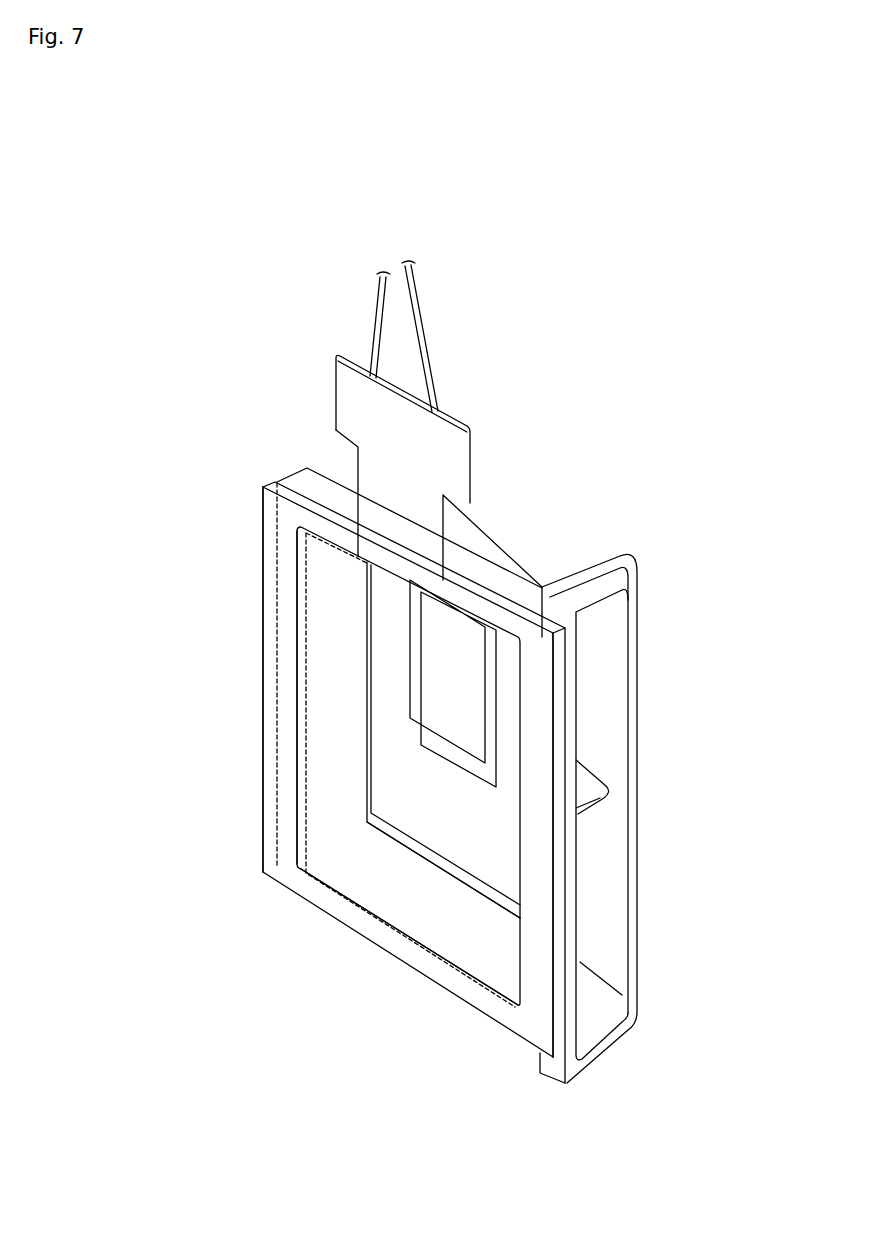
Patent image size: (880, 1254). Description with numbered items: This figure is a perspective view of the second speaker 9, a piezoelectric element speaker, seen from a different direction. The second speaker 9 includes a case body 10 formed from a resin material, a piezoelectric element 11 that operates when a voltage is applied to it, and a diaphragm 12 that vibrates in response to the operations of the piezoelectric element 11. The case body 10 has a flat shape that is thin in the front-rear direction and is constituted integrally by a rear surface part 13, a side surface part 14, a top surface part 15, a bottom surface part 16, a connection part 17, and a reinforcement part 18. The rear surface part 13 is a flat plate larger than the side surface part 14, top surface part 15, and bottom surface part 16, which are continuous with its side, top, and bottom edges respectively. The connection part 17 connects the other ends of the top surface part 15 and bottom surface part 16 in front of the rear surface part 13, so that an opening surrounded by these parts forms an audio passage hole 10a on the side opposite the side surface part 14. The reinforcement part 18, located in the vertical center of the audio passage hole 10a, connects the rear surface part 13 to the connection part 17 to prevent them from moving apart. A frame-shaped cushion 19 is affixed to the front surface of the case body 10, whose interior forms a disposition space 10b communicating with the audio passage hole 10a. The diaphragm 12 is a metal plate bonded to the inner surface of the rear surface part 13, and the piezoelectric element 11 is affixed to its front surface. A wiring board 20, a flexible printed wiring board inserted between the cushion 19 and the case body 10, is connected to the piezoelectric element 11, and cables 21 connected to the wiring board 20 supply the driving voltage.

The second speaker 9 is at (656, 216).
The case body 10 is at (614, 779).
The audio passage hole 10a is at (608, 672).
The disposition space 10b is at (335, 676).
The piezoelectric element 11 is at (427, 737).
The diaphragm 12 is at (393, 772).
The rear surface part 13 is at (452, 872).
The side surface part 14 is at (333, 600).
The top surface part 15 is at (525, 560).
The bottom surface part 16 is at (470, 947).
The connection part 17 is at (543, 810).
The reinforcement part 18 is at (588, 808).
The cushion 19 is at (265, 515).
The wiring board 20 is at (449, 472).
The cables 21 is at (426, 310).